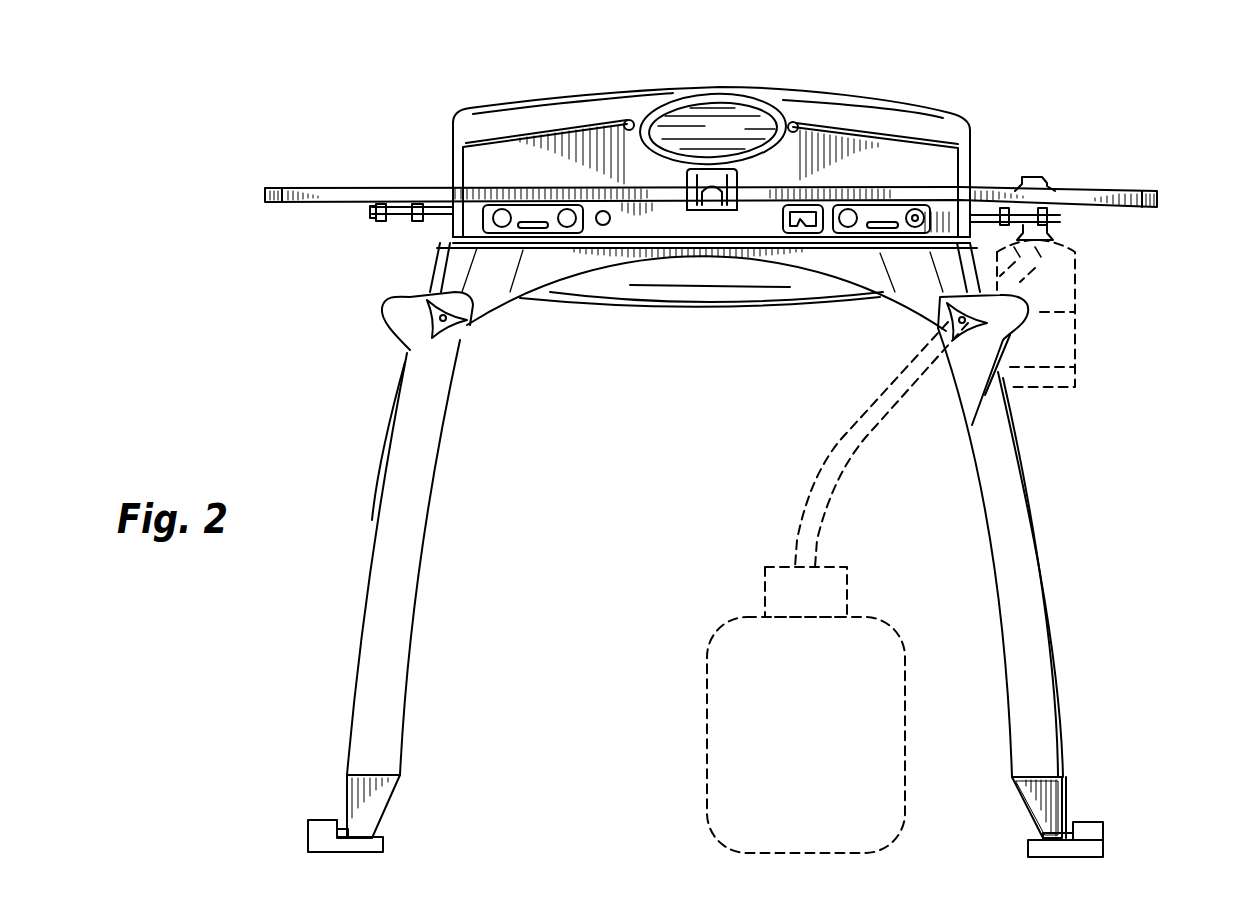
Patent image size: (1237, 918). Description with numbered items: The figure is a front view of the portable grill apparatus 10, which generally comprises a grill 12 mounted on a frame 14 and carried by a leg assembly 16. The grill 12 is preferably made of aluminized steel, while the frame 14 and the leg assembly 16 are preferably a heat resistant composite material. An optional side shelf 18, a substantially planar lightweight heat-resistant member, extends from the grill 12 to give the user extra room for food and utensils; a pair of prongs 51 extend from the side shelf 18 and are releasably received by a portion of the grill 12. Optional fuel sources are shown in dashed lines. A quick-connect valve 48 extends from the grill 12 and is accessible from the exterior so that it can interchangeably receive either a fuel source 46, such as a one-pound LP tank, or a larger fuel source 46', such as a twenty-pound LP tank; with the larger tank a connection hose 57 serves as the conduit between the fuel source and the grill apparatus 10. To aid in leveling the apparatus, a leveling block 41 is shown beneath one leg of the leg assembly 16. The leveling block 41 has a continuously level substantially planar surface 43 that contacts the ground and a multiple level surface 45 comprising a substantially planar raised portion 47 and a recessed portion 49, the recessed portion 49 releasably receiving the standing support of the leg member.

The portable grill apparatus 10 is at (312, 98).
The grill 12 is at (622, 84).
The frame 14 is at (452, 267).
The leg assembly 16 is at (325, 568).
The side shelf 18 is at (1105, 197).
The leveling block 41 is at (1092, 845).
The substantially planar surface 43 is at (1046, 856).
The multiple level surface 45 is at (1078, 782).
The fuel source 46 is at (1083, 313).
The fuel source 46' is at (826, 710).
The raised portion 47 is at (1085, 818).
The quick-connect valve 48 is at (1035, 176).
The recessed portion 49 is at (1033, 838).
The prongs 51 is at (387, 222).
The connection hose 57 is at (808, 508).